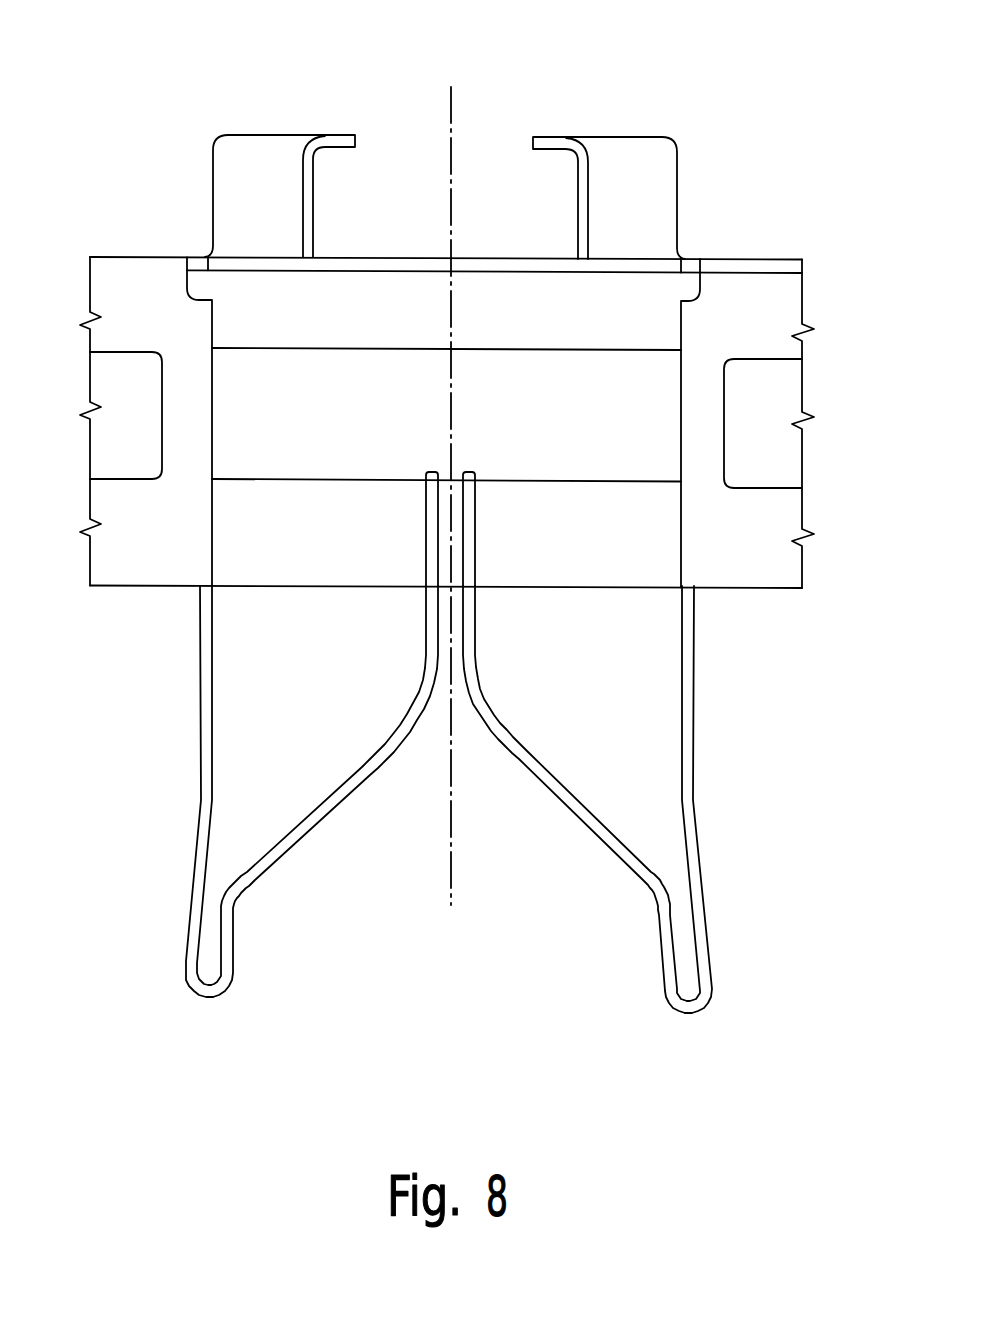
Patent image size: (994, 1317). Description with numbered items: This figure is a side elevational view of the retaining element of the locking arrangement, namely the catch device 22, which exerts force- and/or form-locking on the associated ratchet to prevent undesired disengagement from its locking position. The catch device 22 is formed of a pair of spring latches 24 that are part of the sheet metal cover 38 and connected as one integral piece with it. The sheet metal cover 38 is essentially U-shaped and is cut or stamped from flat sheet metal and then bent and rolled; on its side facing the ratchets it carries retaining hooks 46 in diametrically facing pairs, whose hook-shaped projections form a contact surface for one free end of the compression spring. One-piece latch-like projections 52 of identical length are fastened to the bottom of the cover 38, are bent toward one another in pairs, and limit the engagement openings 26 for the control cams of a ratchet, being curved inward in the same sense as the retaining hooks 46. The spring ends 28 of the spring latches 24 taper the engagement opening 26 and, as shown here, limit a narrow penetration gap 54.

The catch device 22 is at (471, 428).
The spring latches 24 is at (557, 790).
The engagement opening 26 is at (440, 742).
The spring ends 28 is at (433, 542).
The sheet metal cover 38 is at (730, 320).
The retaining hooks 46 is at (268, 177).
The latch-like projections 52 is at (203, 762).
The penetration gap 54 is at (457, 502).